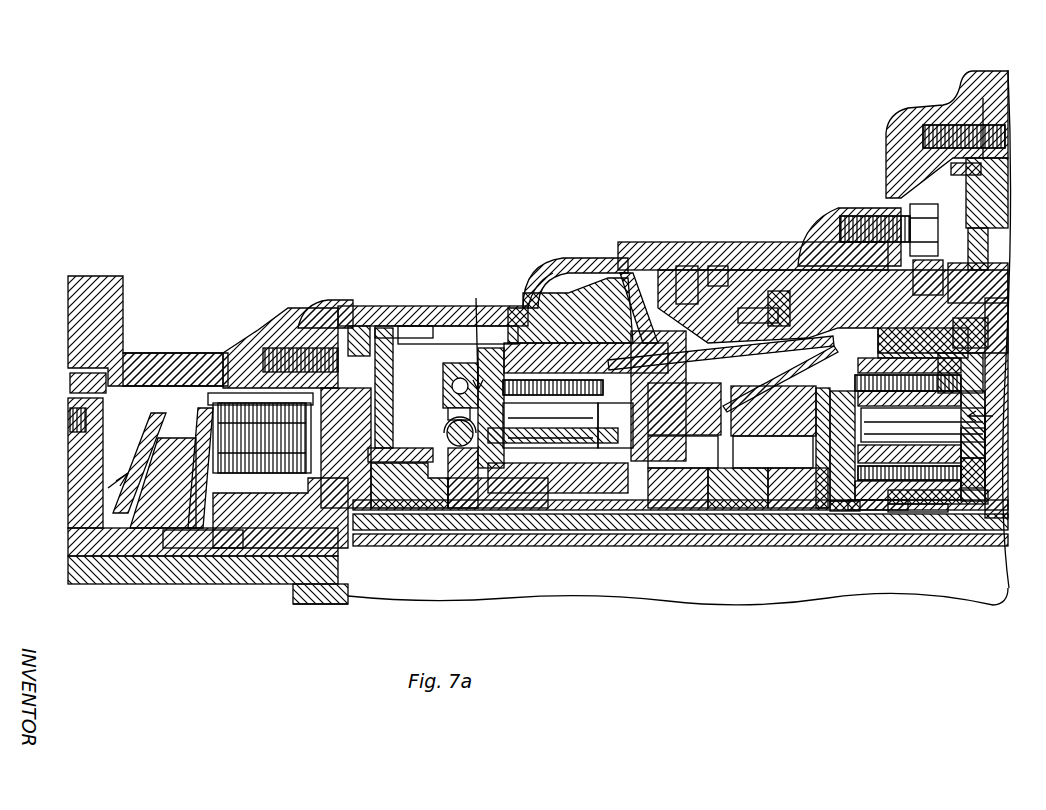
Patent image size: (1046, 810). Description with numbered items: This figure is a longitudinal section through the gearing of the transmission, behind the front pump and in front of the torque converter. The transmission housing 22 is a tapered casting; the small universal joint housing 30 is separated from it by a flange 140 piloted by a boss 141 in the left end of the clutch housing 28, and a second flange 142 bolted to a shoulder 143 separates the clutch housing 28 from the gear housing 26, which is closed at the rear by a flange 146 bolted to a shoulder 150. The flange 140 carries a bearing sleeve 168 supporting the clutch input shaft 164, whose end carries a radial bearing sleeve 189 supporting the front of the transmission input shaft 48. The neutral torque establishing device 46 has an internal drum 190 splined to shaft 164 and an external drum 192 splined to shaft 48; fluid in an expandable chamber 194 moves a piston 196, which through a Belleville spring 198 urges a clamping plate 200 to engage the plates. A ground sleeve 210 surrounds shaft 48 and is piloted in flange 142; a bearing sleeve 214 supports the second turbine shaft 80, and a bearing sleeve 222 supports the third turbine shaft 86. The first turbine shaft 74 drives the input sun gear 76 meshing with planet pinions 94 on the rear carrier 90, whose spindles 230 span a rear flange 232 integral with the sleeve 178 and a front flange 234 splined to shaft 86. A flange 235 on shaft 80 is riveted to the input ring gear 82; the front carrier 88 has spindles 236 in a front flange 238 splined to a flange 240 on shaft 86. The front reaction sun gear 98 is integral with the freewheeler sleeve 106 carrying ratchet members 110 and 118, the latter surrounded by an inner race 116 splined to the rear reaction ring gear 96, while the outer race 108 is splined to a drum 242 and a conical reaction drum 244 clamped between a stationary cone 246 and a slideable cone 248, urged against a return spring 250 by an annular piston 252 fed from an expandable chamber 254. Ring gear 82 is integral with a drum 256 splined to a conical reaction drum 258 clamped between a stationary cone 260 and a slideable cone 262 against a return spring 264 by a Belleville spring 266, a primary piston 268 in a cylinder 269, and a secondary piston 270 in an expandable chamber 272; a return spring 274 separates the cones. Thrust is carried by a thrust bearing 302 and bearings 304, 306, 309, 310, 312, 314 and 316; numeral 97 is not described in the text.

The transmission housing 22 is at (555, 250).
The gear housing 26 is at (650, 240).
The clutch housing 28 is at (158, 348).
The universal joint housing 30 is at (65, 290).
The neutral torque establishing device 46 is at (83, 478).
The transmission input shaft 48 is at (345, 597).
The first turbine shaft 74 is at (950, 538).
The input sun gear 76 is at (875, 500).
The second turbine shaft 80 is at (1000, 530).
The input ring gear 82 is at (510, 345).
The third turbine shaft 86 is at (980, 520).
The front carrier 88 is at (481, 372).
The rear planet carrier 90 is at (1001, 411).
The planet pinions 94 is at (912, 418).
The rear reaction ring gear 96 is at (970, 352).
The gear 97 is at (580, 400).
The front reaction sun gear 98 is at (605, 435).
The freewheeler sleeve 106 is at (710, 500).
The outer race 108 is at (640, 370).
The ratchet members 110 is at (655, 500).
The inner race 116 is at (740, 430).
The ratchet members 118 is at (750, 500).
The flange 140 is at (72, 440).
The boss 141 is at (70, 385).
The second flange 142 is at (318, 305).
The shoulder 143 is at (300, 318).
The flange 146 is at (998, 128).
The shoulder 150 is at (982, 100).
The clutch input shaft 164 is at (160, 540).
The bearing sleeve 168 is at (110, 548).
The sleeve 178 is at (975, 488).
The radial bearing sleeve 189 is at (265, 540).
The internal drum 190 is at (210, 540).
The external drum 192 is at (200, 392).
The expandable chamber 194 is at (132, 480).
The piston 196 is at (150, 450).
The Belleville spring 198 is at (193, 400).
The clamping plate 200 is at (215, 395).
The ground sleeve 210 is at (575, 485).
The bearing sleeve 214 is at (365, 505).
The bearing sleeve 222 is at (455, 500).
The spindles 230 is at (975, 428).
The rear flange 232 is at (970, 385).
The front flange 234 is at (770, 410).
The flange 235 is at (440, 392).
The spindles 236 is at (684, 425).
The front flange 238 is at (440, 362).
The flange 240 is at (410, 500).
The drum 242 is at (862, 332).
The conical reaction drum 244 is at (975, 290).
The stationary cone 246 is at (815, 280).
The slideable cone 248 is at (980, 325).
The return spring 250 is at (935, 278).
The annular piston 252 is at (975, 230).
The expandable chamber 254 is at (985, 180).
The drum 256 is at (755, 380).
The conical reaction drum 258 is at (768, 283).
The stationary cone 260 is at (745, 300).
The slideable cone 262 is at (708, 258).
The return spring 264 is at (676, 258).
The Belleville spring 266 is at (620, 275).
The primary piston 268 is at (525, 335).
The cylinder 269 is at (520, 300).
The secondary piston 270 is at (428, 325).
The expandable chamber 272 is at (375, 290).
The return spring 274 is at (790, 250).
The thrust bearing 302 is at (440, 420).
The bearing 304 is at (553, 414).
The bearing 306 is at (485, 500).
The bearing 309 is at (812, 500).
The bearing 310 is at (845, 503).
The thrust bearing 312 is at (970, 455).
The thrust bearing 314 is at (922, 510).
The bearing 316 is at (875, 420).